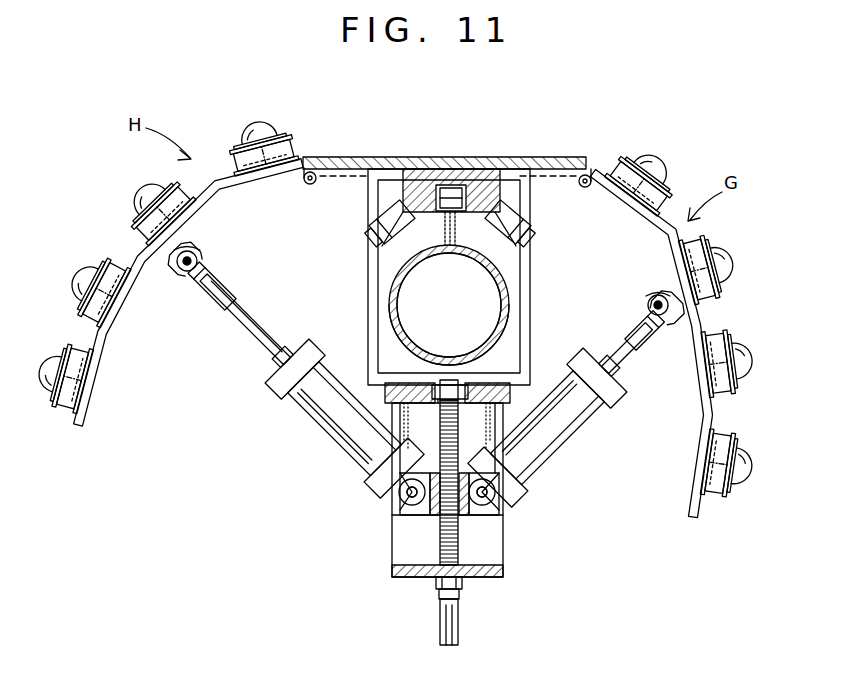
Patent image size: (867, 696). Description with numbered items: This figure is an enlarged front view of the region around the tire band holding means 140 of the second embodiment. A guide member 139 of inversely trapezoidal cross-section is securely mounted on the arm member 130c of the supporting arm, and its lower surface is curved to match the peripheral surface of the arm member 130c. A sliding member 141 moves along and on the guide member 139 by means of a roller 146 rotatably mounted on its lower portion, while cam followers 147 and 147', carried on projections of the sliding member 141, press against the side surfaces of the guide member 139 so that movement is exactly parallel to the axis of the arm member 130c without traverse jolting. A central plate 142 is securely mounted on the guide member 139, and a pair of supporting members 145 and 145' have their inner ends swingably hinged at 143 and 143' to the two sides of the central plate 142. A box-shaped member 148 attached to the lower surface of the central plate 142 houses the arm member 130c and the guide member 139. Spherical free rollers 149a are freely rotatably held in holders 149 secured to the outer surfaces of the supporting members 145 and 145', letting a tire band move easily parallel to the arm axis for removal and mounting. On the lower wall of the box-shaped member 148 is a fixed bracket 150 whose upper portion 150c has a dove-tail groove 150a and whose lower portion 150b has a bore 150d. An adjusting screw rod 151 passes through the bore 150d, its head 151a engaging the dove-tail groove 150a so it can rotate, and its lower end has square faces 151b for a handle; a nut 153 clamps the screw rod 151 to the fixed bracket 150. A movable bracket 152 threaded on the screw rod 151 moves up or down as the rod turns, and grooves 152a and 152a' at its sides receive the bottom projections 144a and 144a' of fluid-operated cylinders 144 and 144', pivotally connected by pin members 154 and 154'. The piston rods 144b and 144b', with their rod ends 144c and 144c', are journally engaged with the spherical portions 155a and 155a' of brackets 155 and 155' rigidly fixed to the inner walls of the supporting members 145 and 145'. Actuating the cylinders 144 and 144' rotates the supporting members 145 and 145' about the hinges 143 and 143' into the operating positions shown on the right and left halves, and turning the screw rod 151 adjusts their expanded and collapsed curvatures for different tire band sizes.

The tire band holding means 140 is at (398, 152).
The sliding member 141 is at (484, 166).
The central plate 142 is at (553, 160).
The hinge 143 is at (315, 193).
The hinge 143' is at (567, 194).
The supporting member 145 is at (189, 293).
The supporting member 145' is at (651, 343).
The roller 146 is at (436, 166).
The cam follower 147 is at (365, 226).
The cam follower 147' is at (536, 226).
The box-shaped member 148 is at (531, 306).
The guide member 139 is at (460, 243).
The arm member 130c is at (512, 292).
The holder 149 is at (287, 152).
The spherical free roller 149a is at (252, 126).
The fixed bracket 150 is at (500, 568).
The dove-tail groove 150a is at (432, 366).
The lower portion 150b is at (492, 578).
The upper portion 150c is at (505, 398).
The bore 150d is at (440, 586).
The adjusting screw rod 151 is at (440, 538).
The head 151a is at (446, 384).
The square faces 151b is at (456, 628).
The movable bracket 152 is at (460, 512).
The groove 152a is at (380, 504).
The groove 152a' is at (518, 497).
The nut 153 is at (440, 598).
The pin member 154 is at (372, 501).
The pin member 154' is at (481, 456).
The bracket 155 is at (165, 273).
The bracket 155' is at (668, 327).
The spherical portion 155a is at (219, 245).
The spherical portion 155a' is at (640, 277).
The fluid-operated cylinder 144 is at (344, 418).
The fluid-operated cylinder 144' is at (550, 427).
The bottom projection 144a is at (371, 518).
The bottom projection 144a' is at (524, 508).
The piston rod 144b is at (240, 314).
The piston rod 144b' is at (644, 351).
The rod end 144c is at (175, 275).
The rod end 144c' is at (638, 307).